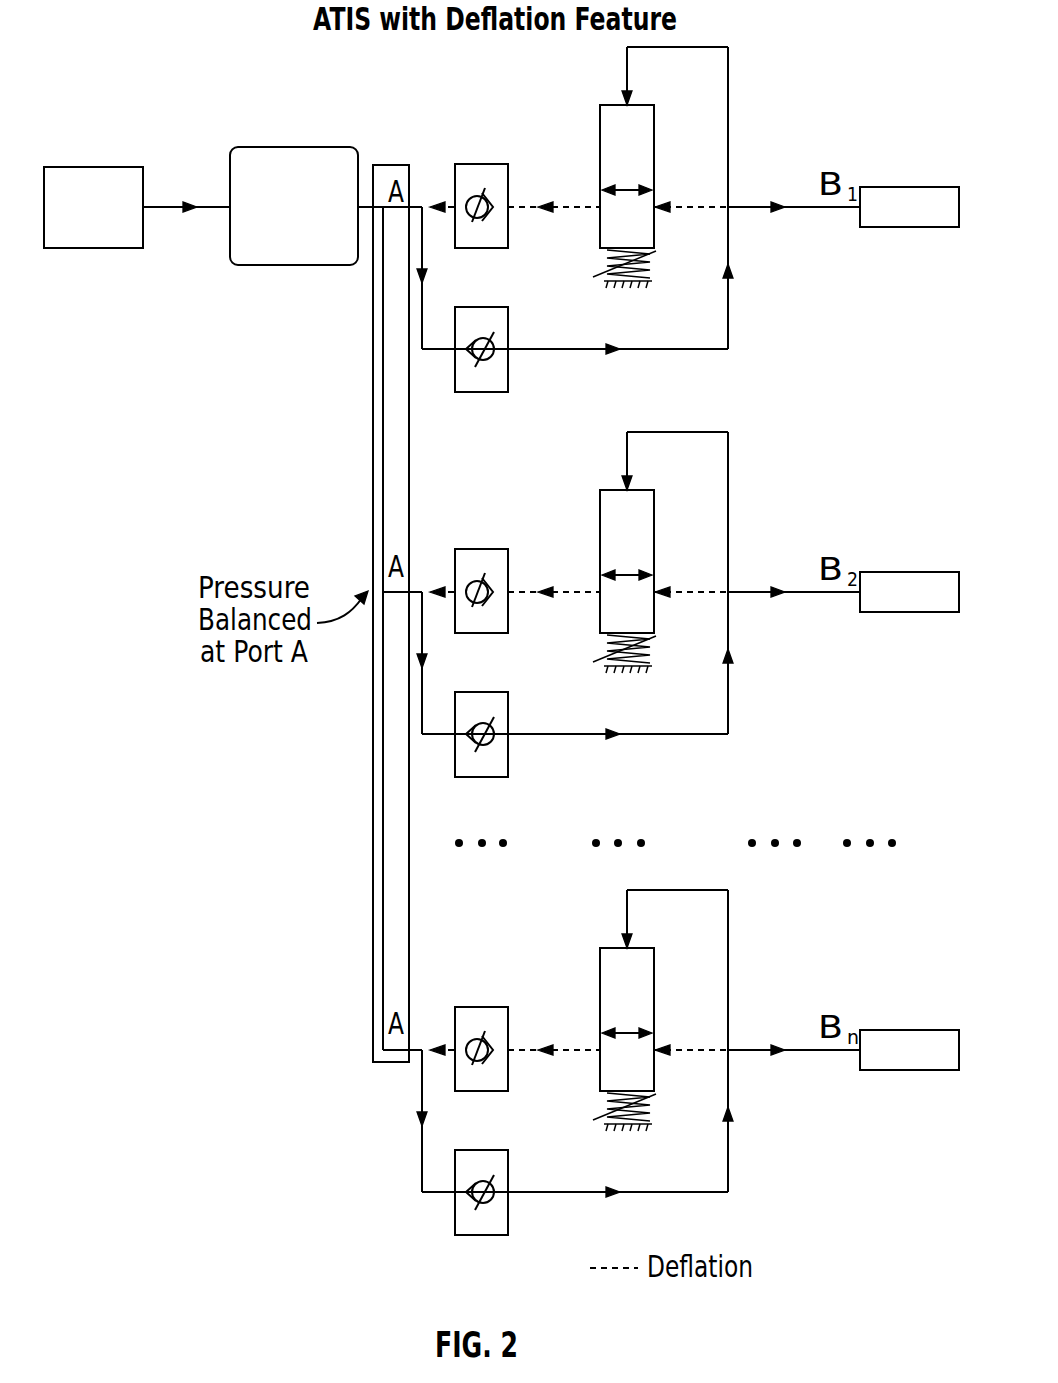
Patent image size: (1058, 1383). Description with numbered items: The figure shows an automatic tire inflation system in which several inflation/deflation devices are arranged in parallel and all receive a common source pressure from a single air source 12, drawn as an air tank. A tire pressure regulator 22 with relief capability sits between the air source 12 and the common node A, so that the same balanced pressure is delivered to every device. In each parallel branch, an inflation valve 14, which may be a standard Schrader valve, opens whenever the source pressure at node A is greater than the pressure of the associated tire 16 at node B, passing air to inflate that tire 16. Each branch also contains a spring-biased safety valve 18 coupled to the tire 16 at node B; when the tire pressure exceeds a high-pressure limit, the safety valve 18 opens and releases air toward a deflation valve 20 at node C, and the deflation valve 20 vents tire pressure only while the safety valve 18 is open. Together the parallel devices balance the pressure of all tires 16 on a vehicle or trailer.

The air source 12 is at (98, 166).
The inflation valve 14 is at (509, 362).
The tire 16 is at (910, 187).
The safety valve 18 is at (654, 123).
The deflation valve 20 is at (480, 164).
The tire pressure regulator 22 is at (283, 147).